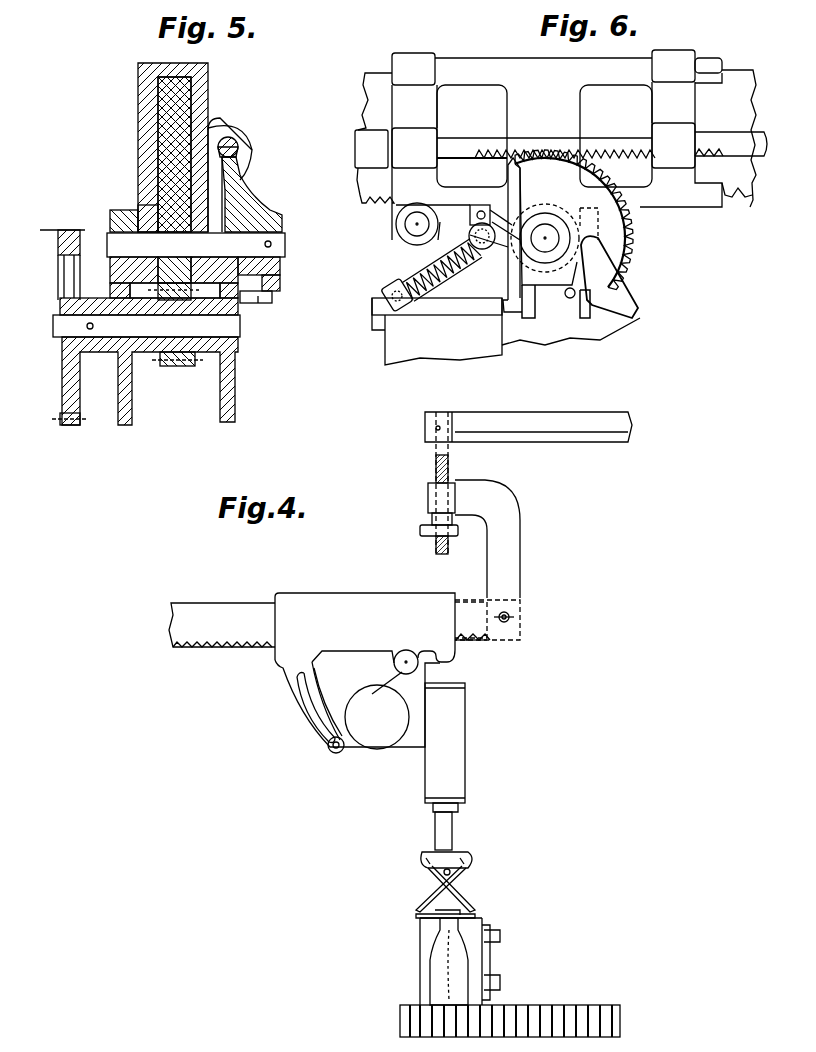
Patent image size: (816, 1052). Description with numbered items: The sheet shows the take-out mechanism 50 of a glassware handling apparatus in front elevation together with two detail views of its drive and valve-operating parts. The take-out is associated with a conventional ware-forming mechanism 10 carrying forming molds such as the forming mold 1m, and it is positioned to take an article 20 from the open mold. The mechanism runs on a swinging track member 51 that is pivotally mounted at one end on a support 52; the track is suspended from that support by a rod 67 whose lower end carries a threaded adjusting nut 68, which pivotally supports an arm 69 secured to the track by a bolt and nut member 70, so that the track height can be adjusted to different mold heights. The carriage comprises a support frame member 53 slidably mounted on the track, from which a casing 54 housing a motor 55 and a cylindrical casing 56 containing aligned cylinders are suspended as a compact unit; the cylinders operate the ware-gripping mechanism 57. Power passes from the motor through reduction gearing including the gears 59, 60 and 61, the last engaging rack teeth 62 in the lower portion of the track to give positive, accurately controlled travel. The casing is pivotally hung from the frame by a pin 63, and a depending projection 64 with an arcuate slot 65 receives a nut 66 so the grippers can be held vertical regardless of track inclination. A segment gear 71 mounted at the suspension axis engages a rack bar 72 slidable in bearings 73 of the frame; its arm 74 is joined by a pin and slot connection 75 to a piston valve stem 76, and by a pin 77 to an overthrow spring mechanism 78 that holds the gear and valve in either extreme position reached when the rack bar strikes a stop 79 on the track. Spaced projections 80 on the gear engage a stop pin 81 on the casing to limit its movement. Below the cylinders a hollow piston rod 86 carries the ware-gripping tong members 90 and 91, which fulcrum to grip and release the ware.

In FIG. 4, the ware-forming mechanism 10 is at (400, 1025).
In FIG. 4, the forming mold 1m is at (420, 950).
In FIG. 4, the article 20 is at (430, 982).
In FIG. 4, the take-out mechanism 50 is at (357, 679).
In FIG. 5, the swinging track member 51 is at (185, 100).
In FIG. 6, the swinging track member 51 is at (365, 113).
In FIG. 4, the swinging track member 51 is at (200, 640).
In FIG. 4, the support 52 is at (610, 445).
In FIG. 5, the support frame member 53 is at (210, 118).
In FIG. 6, the support frame member 53 is at (470, 62).
In FIG. 4, the support frame member 53 is at (330, 592).
In FIG. 5, the casing 54 is at (235, 403).
In FIG. 6, the casing 54 is at (608, 340).
In FIG. 4, the casing 54 is at (422, 672).
In FIG. 4, the motor 55 is at (382, 750).
In FIG. 6, the cylindrical casing 56 is at (385, 345).
In FIG. 4, the cylindrical casing 56 is at (460, 757).
In FIG. 4, the ware-gripping mechanism 57 is at (425, 869).
In FIG. 5, the reduction gear 59 is at (68, 425).
In FIG. 5, the reduction gear 60 is at (178, 367).
In FIG. 5, the reduction gear 61 is at (140, 214).
In FIG. 5, the rack teeth 62 is at (155, 205).
In FIG. 6, the rack teeth 62 is at (715, 185).
In FIG. 4, the rack teeth 62 is at (248, 645).
In FIG. 5, the pin 63 is at (284, 240).
In FIG. 6, the pin 63 is at (548, 232).
In FIG. 4, the depending projection 64 is at (295, 708).
In FIG. 4, the arcuate slot 65 is at (318, 722).
In FIG. 4, the nut 66 is at (328, 748).
In FIG. 4, the rod 67 is at (436, 467).
In FIG. 4, the threaded adjusting nut 68 is at (420, 530).
In FIG. 4, the arm 69 is at (512, 560).
In FIG. 4, the bolt and nut member 70 is at (508, 622).
In FIG. 5, the segment gear 71 is at (250, 183).
In FIG. 6, the segment gear 71 is at (636, 243).
In FIG. 5, the rack bar 72 is at (238, 150).
In FIG. 6, the rack bar 72 is at (468, 137).
In FIG. 5, the bearing 73 is at (240, 132).
In FIG. 6, the bearing 73 is at (407, 130).
In FIG. 6, the arm 74 is at (500, 232).
In FIG. 6, the pin and slot connection 75 is at (478, 205).
In FIG. 6, the piston valve stem 76 is at (475, 285).
In FIG. 6, the pin 77 is at (470, 236).
In FIG. 6, the overthrow spring mechanism 78 is at (422, 262).
In FIG. 6, the stop 79 is at (357, 175).
In FIG. 5, the spaced projections 80 is at (272, 298).
In FIG. 6, the spaced projections 80 is at (530, 318).
In FIG. 5, the stop pin 81 is at (258, 304).
In FIG. 6, the stop pin 81 is at (569, 298).
In FIG. 4, the hollow piston rod 86 is at (455, 832).
In FIG. 4, the ware-gripping tong member 90 is at (478, 906).
In FIG. 4, the ware-gripping tong member 91 is at (416, 915).